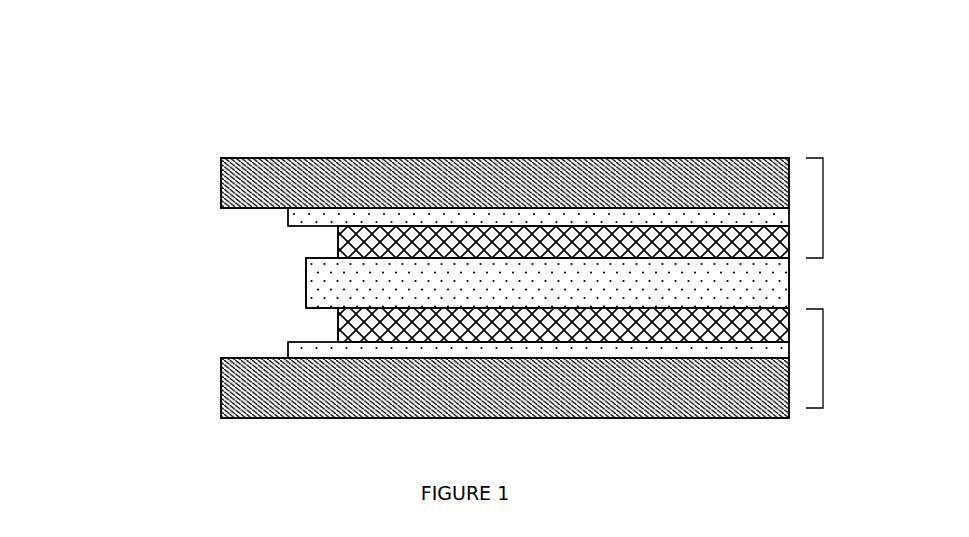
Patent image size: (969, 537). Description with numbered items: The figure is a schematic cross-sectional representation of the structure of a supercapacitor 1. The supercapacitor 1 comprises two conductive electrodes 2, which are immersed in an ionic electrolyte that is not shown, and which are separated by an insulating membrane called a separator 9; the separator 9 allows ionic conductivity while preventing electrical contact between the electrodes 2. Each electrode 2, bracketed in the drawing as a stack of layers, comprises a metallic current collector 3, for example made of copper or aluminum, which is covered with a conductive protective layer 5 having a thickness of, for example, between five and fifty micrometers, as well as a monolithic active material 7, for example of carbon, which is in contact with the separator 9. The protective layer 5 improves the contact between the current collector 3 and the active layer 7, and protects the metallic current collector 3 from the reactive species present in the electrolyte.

The supercapacitor 1 is at (606, 138).
The conductive electrode 2 is at (823, 188).
The metallic current collector 3 is at (437, 178).
The conductive protective layer 5 is at (313, 223).
The monolithic active material 7 is at (338, 240).
The separator 9 is at (747, 276).